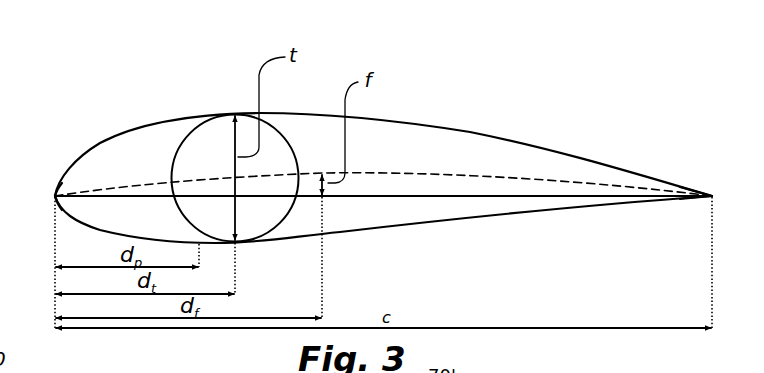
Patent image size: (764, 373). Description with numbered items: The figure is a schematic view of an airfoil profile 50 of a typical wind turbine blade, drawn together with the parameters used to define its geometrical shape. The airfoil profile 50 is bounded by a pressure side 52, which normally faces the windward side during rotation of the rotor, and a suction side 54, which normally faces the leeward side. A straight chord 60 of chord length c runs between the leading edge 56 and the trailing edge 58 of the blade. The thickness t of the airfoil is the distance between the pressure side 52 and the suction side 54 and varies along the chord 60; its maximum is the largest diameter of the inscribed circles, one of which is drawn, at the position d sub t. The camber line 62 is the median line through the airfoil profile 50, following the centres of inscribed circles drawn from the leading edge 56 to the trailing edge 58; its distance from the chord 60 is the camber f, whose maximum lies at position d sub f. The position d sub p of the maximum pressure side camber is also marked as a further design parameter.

The airfoil profile 50 is at (366, 51).
The pressure side 52 is at (512, 218).
The suction side 54 is at (463, 131).
The leading edge 56 is at (54, 195).
The trailing edge 58 is at (712, 195).
The chord 60 is at (544, 195).
The camber line 62 is at (375, 175).